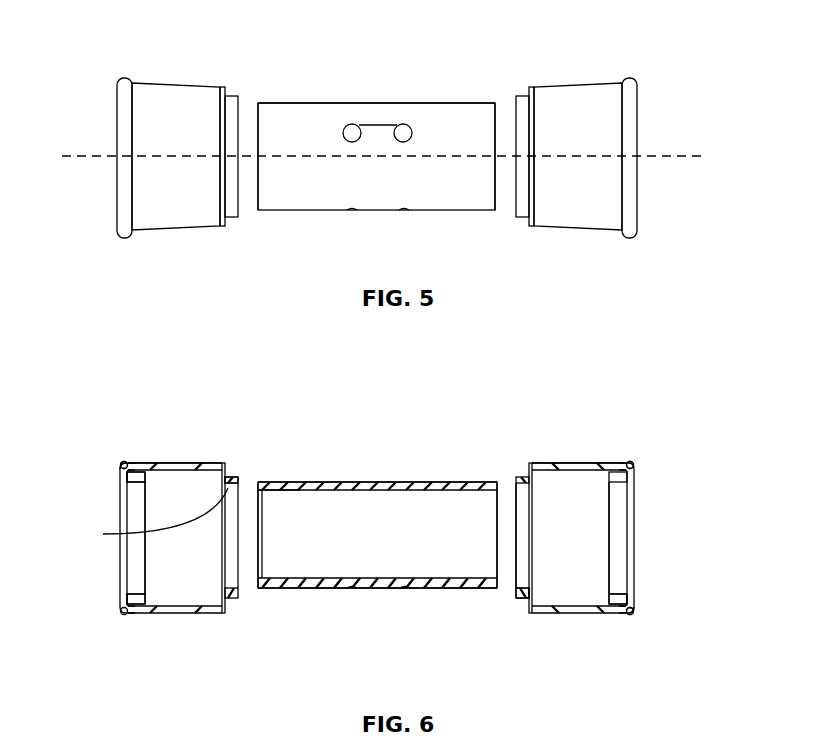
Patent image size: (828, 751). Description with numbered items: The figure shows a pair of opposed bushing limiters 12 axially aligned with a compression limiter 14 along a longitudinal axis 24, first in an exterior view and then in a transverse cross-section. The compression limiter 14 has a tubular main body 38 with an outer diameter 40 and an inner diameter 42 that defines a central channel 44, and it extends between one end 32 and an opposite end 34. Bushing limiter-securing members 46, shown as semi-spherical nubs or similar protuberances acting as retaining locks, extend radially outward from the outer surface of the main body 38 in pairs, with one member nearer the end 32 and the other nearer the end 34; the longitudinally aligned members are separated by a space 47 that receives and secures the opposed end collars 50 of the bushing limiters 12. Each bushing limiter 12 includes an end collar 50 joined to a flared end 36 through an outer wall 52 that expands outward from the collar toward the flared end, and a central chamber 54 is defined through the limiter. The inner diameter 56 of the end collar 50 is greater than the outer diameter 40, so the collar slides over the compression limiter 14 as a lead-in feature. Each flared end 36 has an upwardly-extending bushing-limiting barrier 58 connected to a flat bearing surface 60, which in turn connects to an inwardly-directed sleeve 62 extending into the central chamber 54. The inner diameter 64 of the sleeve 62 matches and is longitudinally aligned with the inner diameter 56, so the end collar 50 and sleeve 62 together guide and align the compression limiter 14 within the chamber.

In FIG. 5, the bushing limiter 12 is at (381, 157).
In FIG. 6, the bushing limiter 12 is at (382, 536).
In FIG. 5, the compression limiter 14 is at (364, 148).
In FIG. 6, the compression limiter 14 is at (367, 553).
In FIG. 5, the longitudinal axis 24 is at (80, 158).
In FIG. 5, the end 32 is at (257, 103).
In FIG. 6, the end 32 is at (262, 482).
In FIG. 5, the end 34 is at (495, 211).
In FIG. 6, the end 34 is at (497, 589).
In FIG. 5, the flared end 36 is at (123, 78).
In FIG. 6, the flared end 36 is at (122, 463).
In FIG. 5, the tubular main body 38 is at (310, 103).
In FIG. 6, the tubular main body 38 is at (352, 482).
In FIG. 6, the outer diameter 40 is at (295, 482).
In FIG. 6, the inner diameter 42 is at (283, 493).
In FIG. 6, the central channel 44 is at (297, 547).
In FIG. 5, the bushing limiter-securing member 46 is at (352, 124).
In FIG. 6, the bushing limiter-securing member 46 is at (352, 590).
In FIG. 5, the space 47 is at (376, 125).
In FIG. 6, the end collar 50 is at (234, 477).
In FIG. 6, the outer wall 52 is at (178, 463).
In FIG. 6, the central chamber 54 is at (158, 556).
In FIG. 6, the inner diameter 56 is at (514, 497).
In FIG. 6, the bushing-limiting barrier 58 is at (130, 463).
In FIG. 6, the bearing surface 60 is at (122, 468).
In FIG. 6, the sleeve 62 is at (133, 583).
In FIG. 6, the inner diameter 64 is at (137, 483).